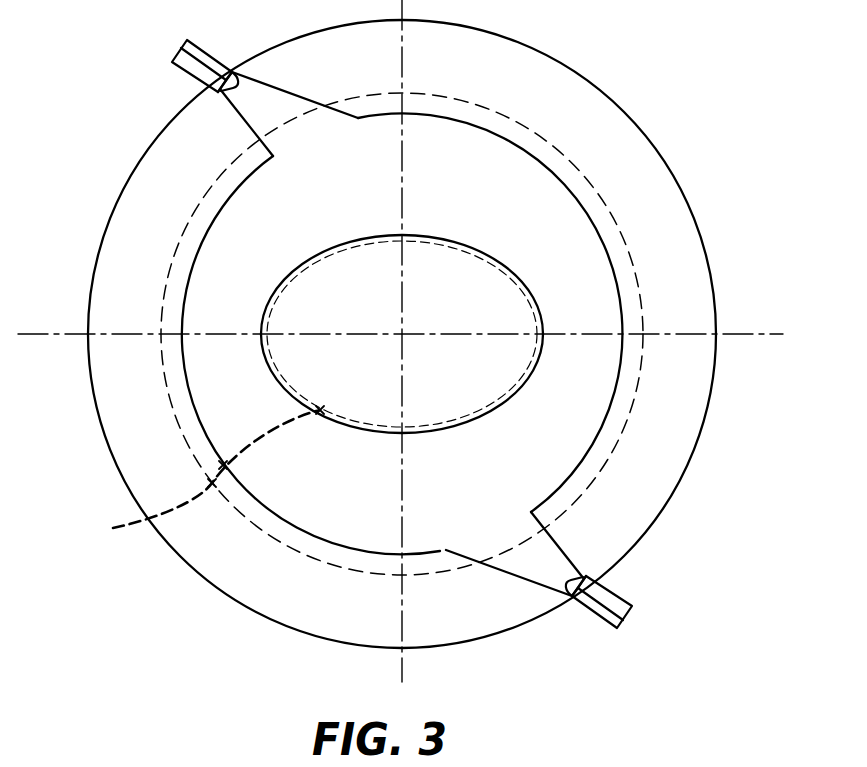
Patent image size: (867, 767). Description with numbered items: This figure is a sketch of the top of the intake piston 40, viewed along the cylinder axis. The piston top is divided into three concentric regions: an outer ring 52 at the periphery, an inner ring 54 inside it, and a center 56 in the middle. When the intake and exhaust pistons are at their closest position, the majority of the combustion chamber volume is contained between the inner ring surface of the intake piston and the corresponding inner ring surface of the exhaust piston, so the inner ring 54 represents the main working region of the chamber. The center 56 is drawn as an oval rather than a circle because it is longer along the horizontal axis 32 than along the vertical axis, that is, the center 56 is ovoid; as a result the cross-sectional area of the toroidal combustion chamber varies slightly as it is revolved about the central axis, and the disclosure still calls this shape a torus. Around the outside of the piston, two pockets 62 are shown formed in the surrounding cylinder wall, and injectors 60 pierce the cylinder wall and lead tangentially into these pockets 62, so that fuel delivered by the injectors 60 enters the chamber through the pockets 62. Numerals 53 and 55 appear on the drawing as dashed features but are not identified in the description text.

The horizontal axis 32 is at (772, 336).
The intake piston 40 is at (652, 105).
The outer ring 52 is at (200, 430).
The baffle (dashed circle) 53 is at (170, 405).
The inner ring 54 is at (198, 320).
The flow path 55 is at (205, 476).
The center 56 is at (427, 390).
The injectors 60 is at (181, 73).
The pockets 62 is at (253, 112).